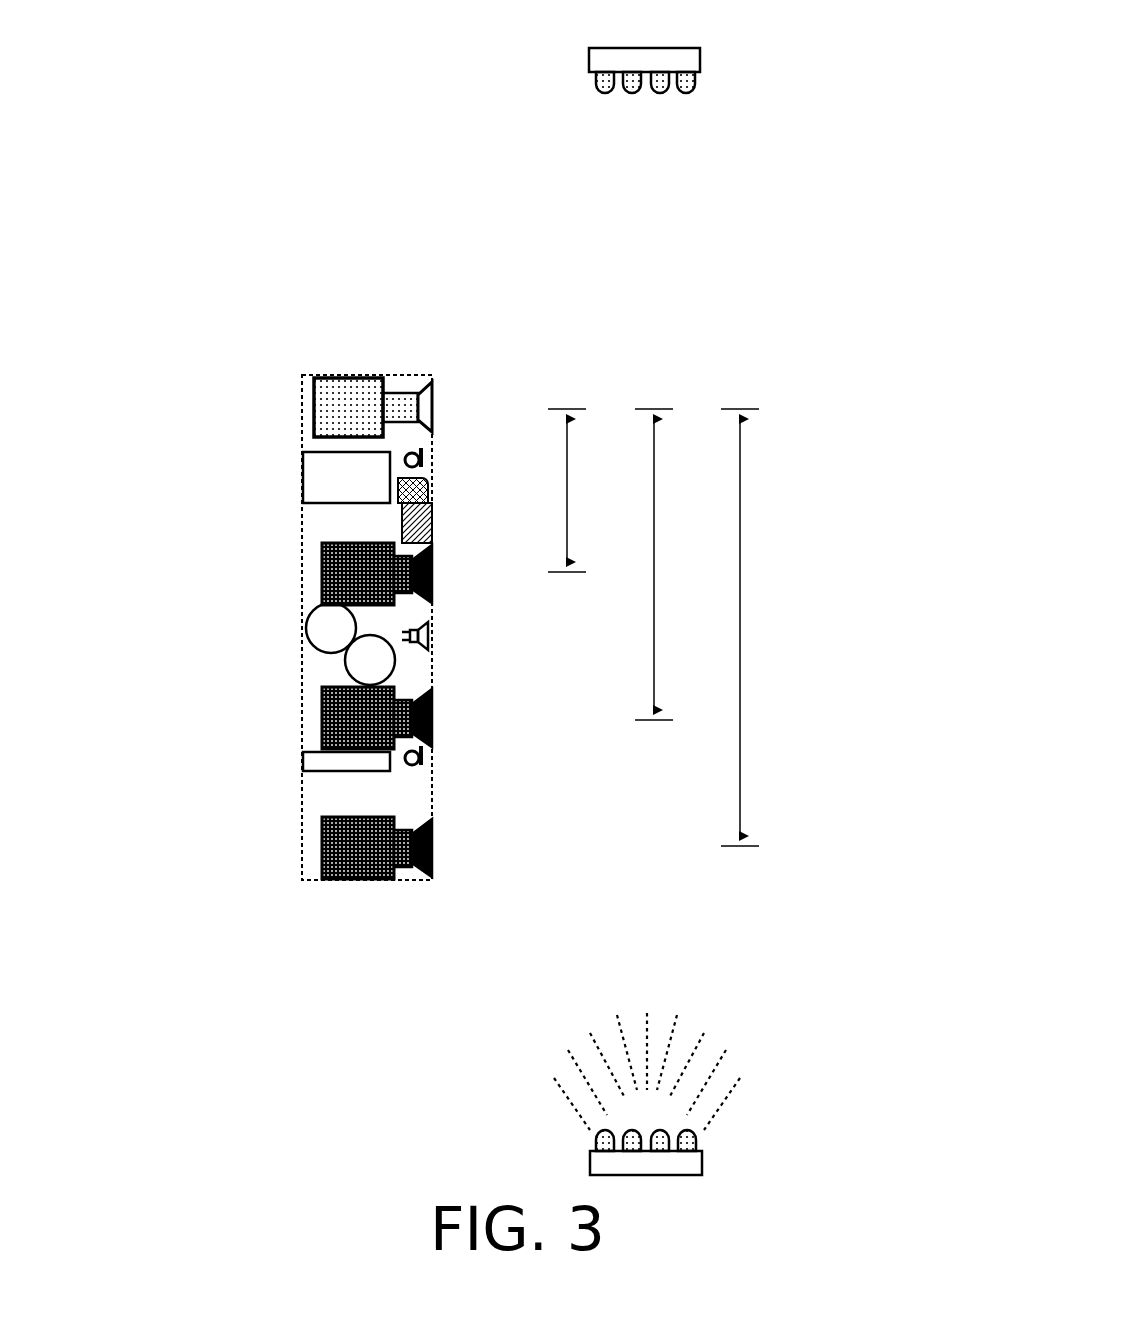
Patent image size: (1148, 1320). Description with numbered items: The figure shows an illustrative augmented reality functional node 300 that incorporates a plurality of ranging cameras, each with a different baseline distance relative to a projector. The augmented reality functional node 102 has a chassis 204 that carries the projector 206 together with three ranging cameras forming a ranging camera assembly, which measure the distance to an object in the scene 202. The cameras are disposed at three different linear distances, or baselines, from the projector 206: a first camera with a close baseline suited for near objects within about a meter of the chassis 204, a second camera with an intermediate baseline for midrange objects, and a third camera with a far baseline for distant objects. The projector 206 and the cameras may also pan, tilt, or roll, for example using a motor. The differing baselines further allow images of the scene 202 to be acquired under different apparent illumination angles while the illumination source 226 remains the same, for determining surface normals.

The augmented reality functional node 300 is at (803, 44).
The augmented reality functional node 102 is at (330, 372).
The chassis 204 is at (366, 372).
The projector 206 is at (348, 405).
The scene 202 is at (702, 644).
The illumination source 226 is at (613, 1165).